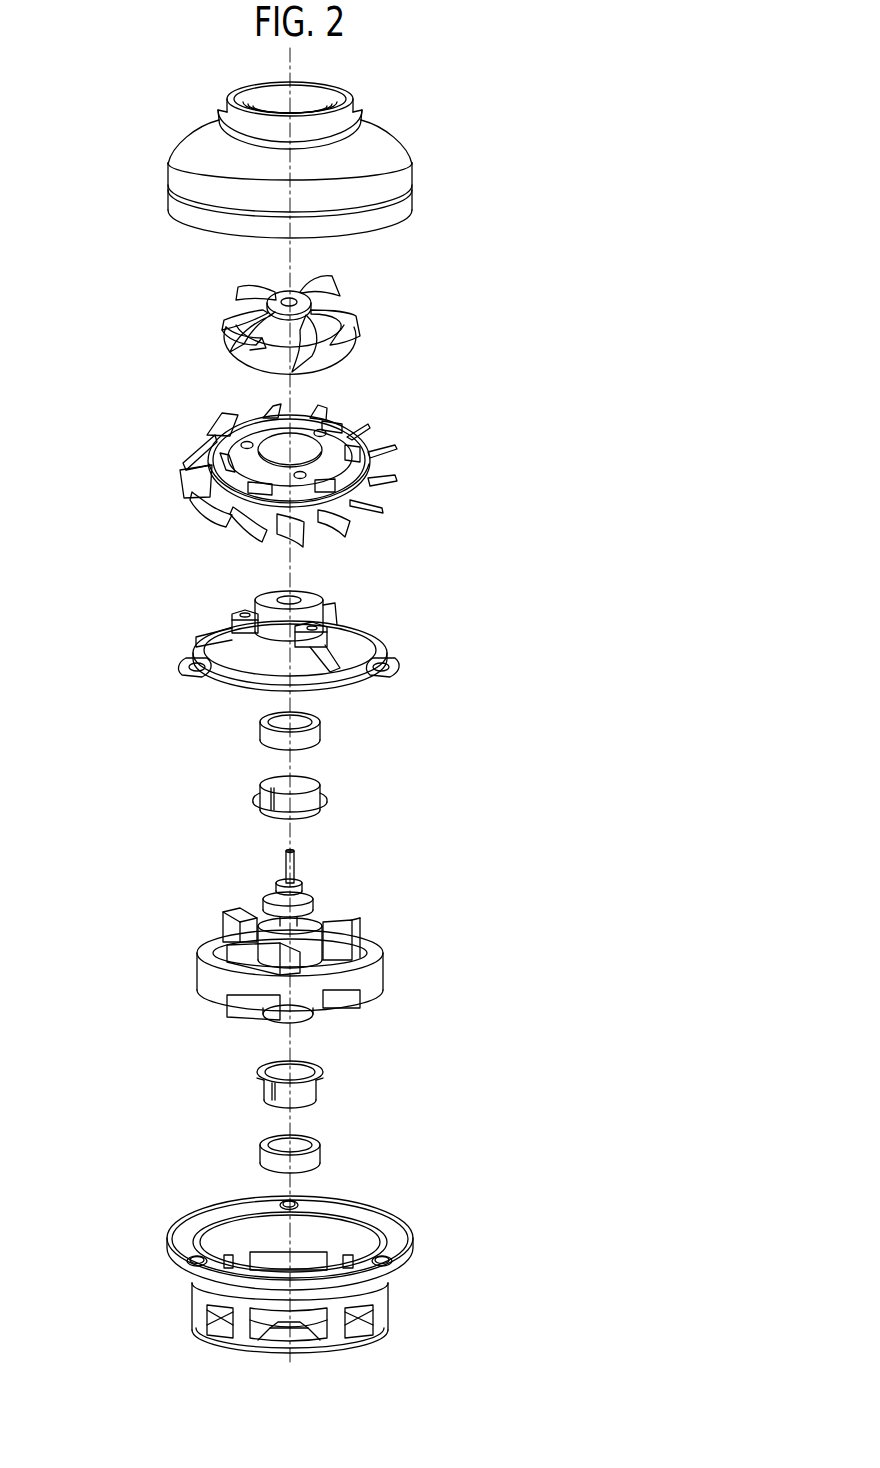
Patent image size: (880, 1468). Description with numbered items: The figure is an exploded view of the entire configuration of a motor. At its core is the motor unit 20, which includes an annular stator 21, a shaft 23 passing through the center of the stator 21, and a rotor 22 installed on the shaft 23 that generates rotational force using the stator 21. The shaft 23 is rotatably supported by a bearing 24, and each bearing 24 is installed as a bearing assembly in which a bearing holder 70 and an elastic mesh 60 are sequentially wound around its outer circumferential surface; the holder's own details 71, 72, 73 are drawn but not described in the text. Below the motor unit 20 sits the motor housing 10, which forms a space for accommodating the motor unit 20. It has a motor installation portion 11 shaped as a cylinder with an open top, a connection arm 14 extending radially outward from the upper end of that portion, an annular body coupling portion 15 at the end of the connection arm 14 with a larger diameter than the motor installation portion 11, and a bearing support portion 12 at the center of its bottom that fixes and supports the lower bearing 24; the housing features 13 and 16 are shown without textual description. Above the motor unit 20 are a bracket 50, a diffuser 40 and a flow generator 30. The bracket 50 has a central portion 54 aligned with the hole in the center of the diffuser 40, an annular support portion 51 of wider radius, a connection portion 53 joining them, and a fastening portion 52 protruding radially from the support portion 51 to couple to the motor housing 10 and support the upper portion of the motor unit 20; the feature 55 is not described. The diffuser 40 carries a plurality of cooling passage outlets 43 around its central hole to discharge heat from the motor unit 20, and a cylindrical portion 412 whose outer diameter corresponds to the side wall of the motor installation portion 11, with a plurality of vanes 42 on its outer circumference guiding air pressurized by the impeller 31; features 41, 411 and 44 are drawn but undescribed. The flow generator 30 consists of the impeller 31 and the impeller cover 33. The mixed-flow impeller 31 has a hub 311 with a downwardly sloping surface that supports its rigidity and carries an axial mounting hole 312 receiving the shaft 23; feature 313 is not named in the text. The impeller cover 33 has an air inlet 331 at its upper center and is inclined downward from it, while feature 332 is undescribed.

The motor housing 10 is at (463, 1297).
The motor installation portion 11 is at (330, 1222).
The bearing support portion 12 is at (330, 1318).
The window 13 is at (285, 1322).
The connection arm 14 is at (190, 1262).
The body coupling portion 15 is at (405, 1260).
The inner rim 16 is at (395, 1238).
The motor unit 20 is at (455, 872).
The stator 21 is at (372, 975).
The rotor 22 is at (315, 945).
The shaft 23 is at (294, 866).
The bearing 24 is at (275, 905).
The flow generator 30 is at (95, 83).
The impeller 31 is at (440, 334).
The hub 311 is at (330, 358).
The axial mounting hole 312 is at (312, 300).
The impeller blade 313 is at (240, 327).
The impeller cover 33 is at (440, 134).
The air inlet 331 is at (330, 100).
The housing groove 332 is at (405, 195).
The diffuser 40 is at (440, 470).
The diffuser disc 41 is at (330, 445).
The outer vane 411 is at (205, 463).
The cylindrical portion 412 is at (345, 520).
The vanes 42 is at (350, 492).
The cooling passage outlets 43 is at (216, 518).
The upper vane 44 is at (240, 440).
The bracket 50 is at (440, 612).
The support portion 51 is at (372, 655).
The fastening portion 52 is at (190, 663).
The connection portion 53 is at (208, 645).
The central portion 54 is at (338, 605).
The mounting block 55 is at (240, 619).
The elastic mesh 60 is at (383, 725).
The bearing holder 70 is at (383, 810).
The bushing body 71 is at (268, 797).
The bushing flange 72 is at (300, 812).
The slit 73 is at (272, 812).